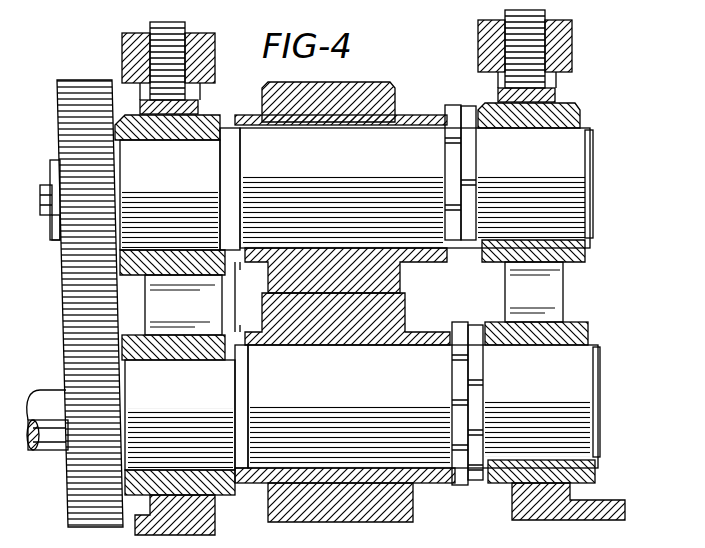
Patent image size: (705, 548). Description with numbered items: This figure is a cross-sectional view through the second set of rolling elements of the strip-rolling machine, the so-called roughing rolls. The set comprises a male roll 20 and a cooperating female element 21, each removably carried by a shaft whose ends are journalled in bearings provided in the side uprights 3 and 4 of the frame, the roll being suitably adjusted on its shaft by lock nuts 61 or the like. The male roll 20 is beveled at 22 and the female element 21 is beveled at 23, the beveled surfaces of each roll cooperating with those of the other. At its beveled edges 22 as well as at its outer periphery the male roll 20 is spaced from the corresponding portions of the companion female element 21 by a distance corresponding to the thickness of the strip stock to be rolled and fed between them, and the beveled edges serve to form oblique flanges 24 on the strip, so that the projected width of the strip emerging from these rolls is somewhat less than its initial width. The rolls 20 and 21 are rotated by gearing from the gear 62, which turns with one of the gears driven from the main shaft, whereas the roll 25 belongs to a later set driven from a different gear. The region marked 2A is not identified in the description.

The gear 62 is at (72, 500).
The beveled edge 22 is at (258, 86).
The male roll 20 is at (398, 97).
The oblique flange 24 is at (405, 294).
The female element 21 is at (405, 306).
The roller end 2A is at (265, 304).
The side upright 3 is at (150, 308).
The side upright 4 is at (545, 298).
The lock nut 61 is at (475, 262).
The beveled edge 23 is at (282, 522).
The roll 25 is at (405, 522).